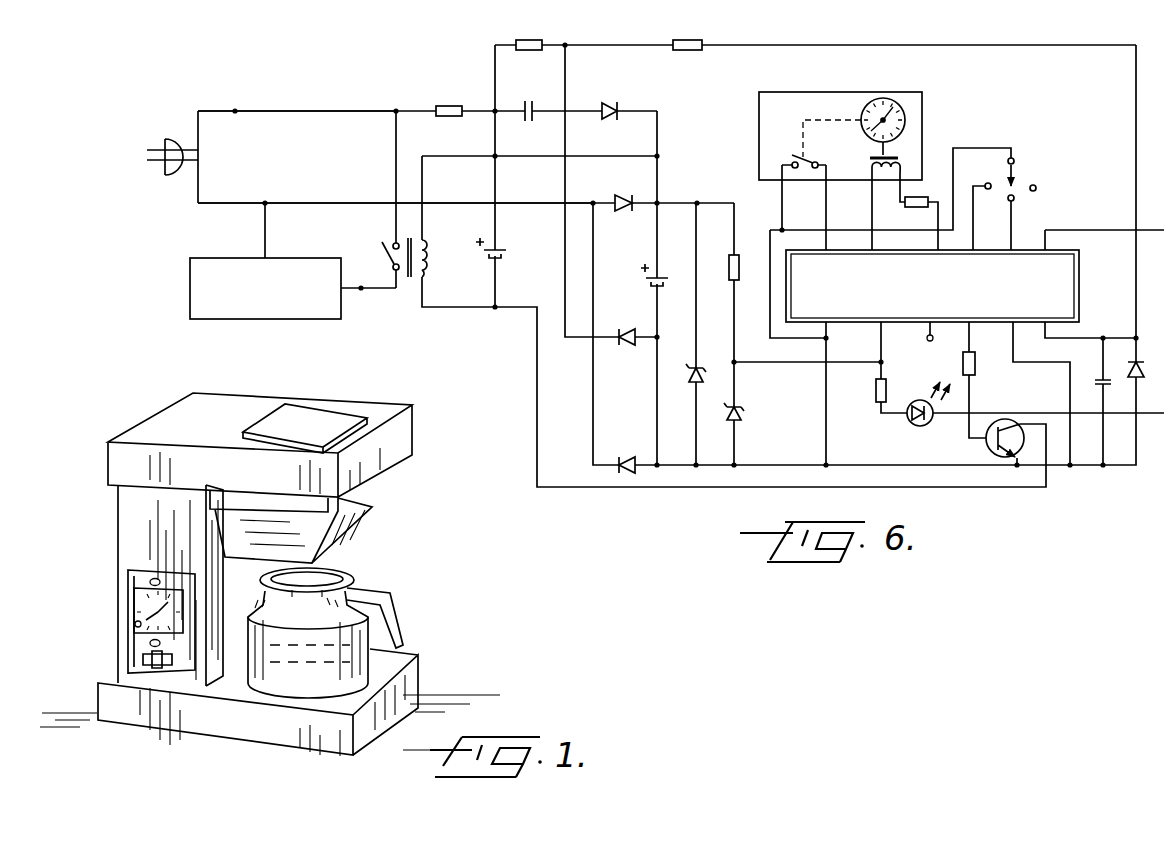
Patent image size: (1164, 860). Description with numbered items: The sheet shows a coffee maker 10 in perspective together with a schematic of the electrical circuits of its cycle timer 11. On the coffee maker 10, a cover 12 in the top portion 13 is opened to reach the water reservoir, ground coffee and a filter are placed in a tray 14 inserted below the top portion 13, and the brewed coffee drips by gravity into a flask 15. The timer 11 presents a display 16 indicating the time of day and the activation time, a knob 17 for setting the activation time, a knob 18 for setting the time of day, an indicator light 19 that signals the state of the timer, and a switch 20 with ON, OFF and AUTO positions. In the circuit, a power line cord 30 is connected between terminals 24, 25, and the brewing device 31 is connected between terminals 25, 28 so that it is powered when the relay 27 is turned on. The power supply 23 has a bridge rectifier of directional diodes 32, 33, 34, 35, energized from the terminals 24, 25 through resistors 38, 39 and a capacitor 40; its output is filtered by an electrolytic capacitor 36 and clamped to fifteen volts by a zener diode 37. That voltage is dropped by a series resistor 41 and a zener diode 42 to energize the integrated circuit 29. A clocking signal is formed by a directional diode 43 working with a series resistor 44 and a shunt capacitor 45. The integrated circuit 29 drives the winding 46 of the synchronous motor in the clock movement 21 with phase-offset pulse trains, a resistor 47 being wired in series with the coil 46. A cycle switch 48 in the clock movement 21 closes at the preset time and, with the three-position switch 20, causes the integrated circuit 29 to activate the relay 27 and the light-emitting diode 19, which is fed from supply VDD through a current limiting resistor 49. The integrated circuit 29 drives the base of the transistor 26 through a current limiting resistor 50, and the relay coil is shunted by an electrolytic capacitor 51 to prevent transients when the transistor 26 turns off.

In FIG. 1, the coffee maker 10 is at (386, 548).
In FIG. 6, the cycle timer 11 is at (383, 88).
In FIG. 1, the cycle timer 11 is at (143, 563).
In FIG. 1, the cover 12 is at (325, 413).
In FIG. 1, the top portion 13 is at (406, 441).
In FIG. 1, the tray 14 is at (373, 501).
In FIG. 1, the flask 15 is at (371, 631).
In FIG. 1, the display 16 is at (130, 597).
In FIG. 1, the knob 17 is at (150, 582).
In FIG. 1, the knob 18 is at (150, 644).
In FIG. 6, the indicator light 19 is at (907, 424).
In FIG. 1, the indicator light 19 is at (134, 625).
In FIG. 6, the switch 20 is at (1018, 171).
In FIG. 1, the switch 20 is at (142, 660).
In FIG. 6, the clock movement 21 is at (938, 112).
In FIG. 6, the power supply 23 is at (680, 176).
In FIG. 6, the terminal 24 is at (235, 110).
In FIG. 6, the terminal 25 is at (265, 202).
In FIG. 6, the transistor 26 is at (989, 448).
In FIG. 6, the relay 27 is at (428, 270).
In FIG. 6, the terminal 28 is at (362, 291).
In FIG. 6, the integrated circuit 29 is at (1080, 297).
In FIG. 6, the power line cord 30 is at (147, 166).
In FIG. 6, the brewing device 31 is at (190, 290).
In FIG. 6, the directional diode 32 is at (606, 102).
In FIG. 6, the directional diode 33 is at (621, 196).
In FIG. 6, the directional diode 34 is at (626, 330).
In FIG. 6, the directional diode 35 is at (630, 457).
In FIG. 6, the electrolytic capacitor 36 is at (647, 281).
In FIG. 6, the zener diode 37 is at (688, 375).
In FIG. 6, the resistor 38 is at (449, 106).
In FIG. 6, the resistor 39 is at (535, 51).
In FIG. 6, the capacitor 40 is at (516, 122).
In FIG. 6, the series resistor 41 is at (740, 260).
In FIG. 6, the zener diode 42 is at (745, 414).
In FIG. 6, the directional diode 43 is at (1131, 358).
In FIG. 6, the series resistor 44 is at (690, 51).
In FIG. 6, the shunt capacitor 45 is at (1094, 381).
In FIG. 6, the winding 46 is at (901, 165).
In FIG. 6, the resistor 47 is at (915, 208).
In FIG. 6, the cycle switch 48 is at (760, 162).
In FIG. 6, the series current limiting resistor 49 is at (876, 392).
In FIG. 6, the current limiting resistor 50 is at (975, 366).
In FIG. 6, the electrolytic capacitor 51 is at (507, 255).